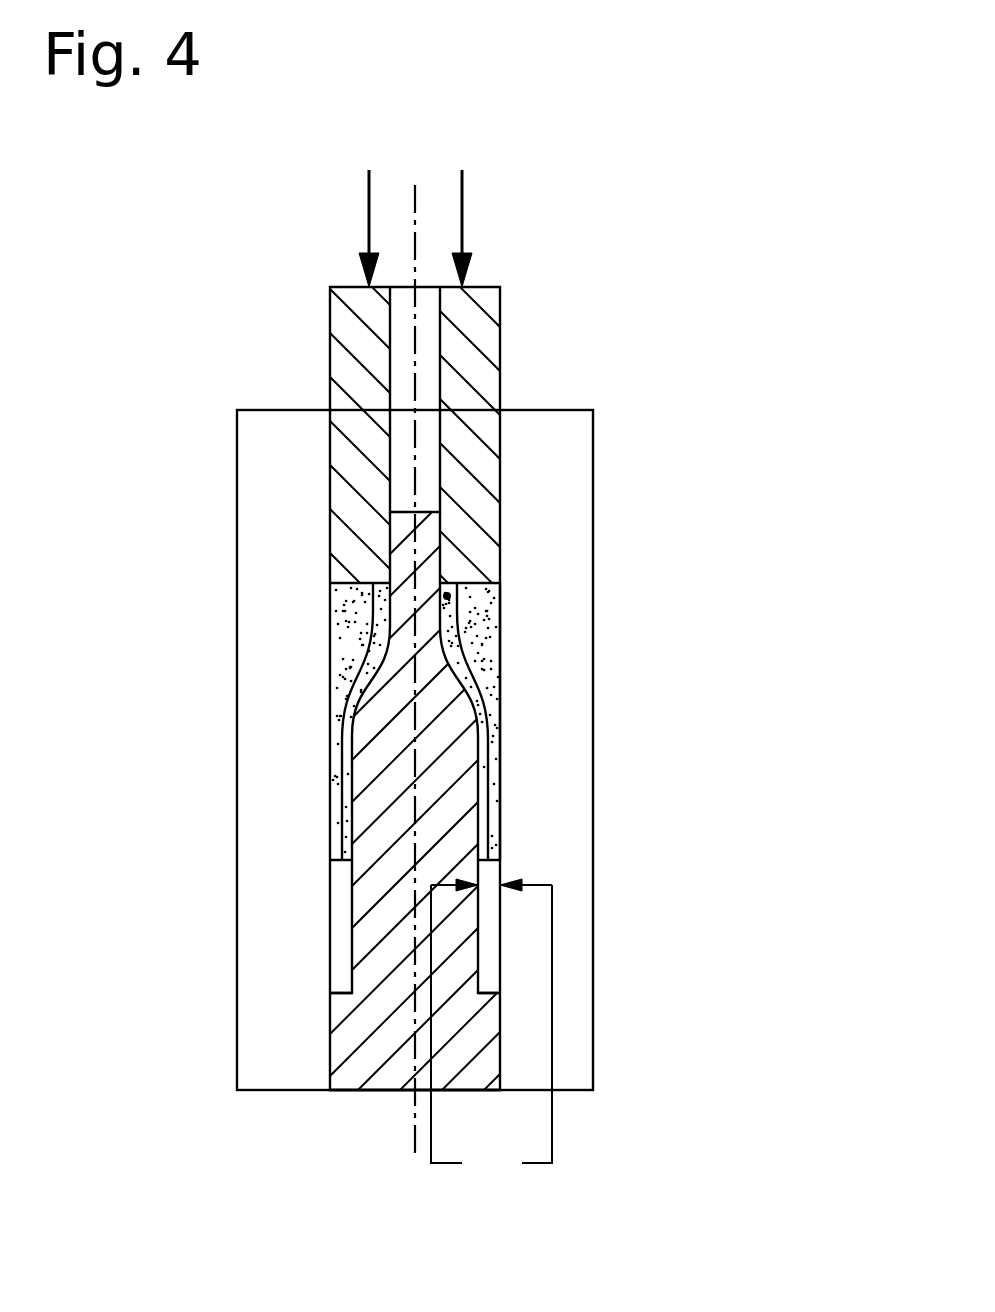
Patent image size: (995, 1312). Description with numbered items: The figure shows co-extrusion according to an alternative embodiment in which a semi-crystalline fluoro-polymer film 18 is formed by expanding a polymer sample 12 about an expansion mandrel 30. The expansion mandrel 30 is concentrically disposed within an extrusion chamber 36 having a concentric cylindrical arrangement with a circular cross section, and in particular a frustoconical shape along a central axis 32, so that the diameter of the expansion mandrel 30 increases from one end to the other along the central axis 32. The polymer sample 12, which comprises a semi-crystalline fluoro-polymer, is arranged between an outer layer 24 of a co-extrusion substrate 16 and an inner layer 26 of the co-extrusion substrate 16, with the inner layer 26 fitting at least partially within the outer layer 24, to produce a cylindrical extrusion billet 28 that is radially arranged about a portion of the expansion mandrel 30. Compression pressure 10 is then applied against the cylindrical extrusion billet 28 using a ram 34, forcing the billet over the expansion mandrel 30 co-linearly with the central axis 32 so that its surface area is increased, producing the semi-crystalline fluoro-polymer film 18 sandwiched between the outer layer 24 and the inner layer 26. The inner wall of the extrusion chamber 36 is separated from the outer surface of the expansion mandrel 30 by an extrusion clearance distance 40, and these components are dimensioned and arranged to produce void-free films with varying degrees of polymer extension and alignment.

The compression pressure 10 is at (463, 212).
The polymer sample 12 is at (460, 640).
The co-extrusion substrate 16 is at (447, 595).
The semi-crystalline fluoro-polymer film 18 is at (501, 788).
The outer layer 24 is at (472, 662).
The inner layer 26 is at (457, 606).
The cylindrical extrusion billet 28 is at (355, 626).
The expansion mandrel 30 is at (363, 1058).
The central axis 32 is at (412, 1145).
The ram 34 is at (501, 345).
The extrusion chamber 36 is at (540, 410).
The extrusion clearance distance 40 is at (491, 1031).